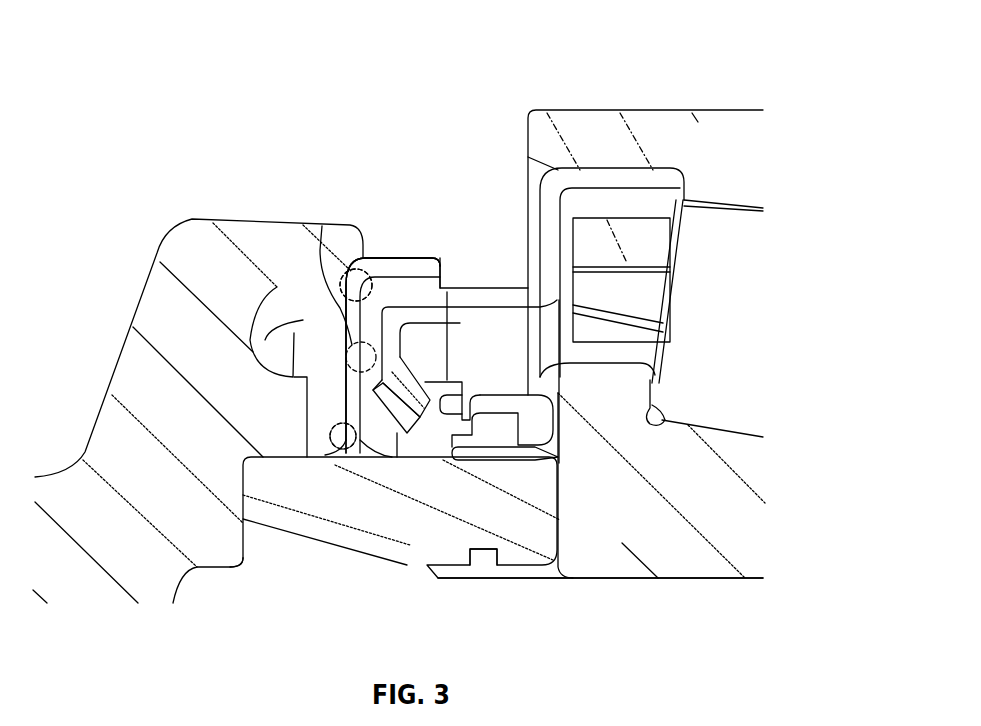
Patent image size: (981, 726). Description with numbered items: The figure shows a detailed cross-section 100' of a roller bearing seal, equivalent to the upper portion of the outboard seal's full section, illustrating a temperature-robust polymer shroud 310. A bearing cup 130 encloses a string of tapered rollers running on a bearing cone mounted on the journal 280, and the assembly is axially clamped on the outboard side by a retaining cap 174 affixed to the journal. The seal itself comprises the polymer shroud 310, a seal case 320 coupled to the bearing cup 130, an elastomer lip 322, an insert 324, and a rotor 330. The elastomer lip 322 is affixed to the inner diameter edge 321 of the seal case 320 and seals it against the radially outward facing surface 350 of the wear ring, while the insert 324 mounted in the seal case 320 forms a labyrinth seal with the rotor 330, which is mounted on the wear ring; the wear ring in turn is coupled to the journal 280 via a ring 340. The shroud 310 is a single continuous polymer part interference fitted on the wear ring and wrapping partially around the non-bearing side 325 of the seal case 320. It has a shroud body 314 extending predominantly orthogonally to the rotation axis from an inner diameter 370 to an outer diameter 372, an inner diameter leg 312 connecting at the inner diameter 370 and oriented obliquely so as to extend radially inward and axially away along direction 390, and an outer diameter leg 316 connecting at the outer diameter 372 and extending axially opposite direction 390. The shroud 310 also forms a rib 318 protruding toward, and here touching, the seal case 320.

The section 100' is at (783, 36).
The bearing cup 130 is at (748, 203).
The retaining cap 174 is at (209, 423).
The journal 280 is at (640, 615).
The temperature-robust polymer shroud 310 is at (401, 243).
The inner diameter leg 312 is at (312, 453).
The shroud body 314 is at (332, 380).
The outer diameter leg 316 is at (385, 255).
The rib 318 is at (341, 292).
The seal case 320 is at (512, 287).
The inner diameter edge 321 is at (409, 440).
The elastomer lip 322 is at (397, 455).
The insert 324 is at (432, 350).
The non-bearing side 325 is at (407, 283).
The rotor 330 is at (513, 393).
The ring 340 is at (477, 563).
The radially outward facing surface 350 is at (293, 455).
The inner diameter 370 is at (353, 458).
The outer diameter 372 is at (357, 268).
The direction 390 is at (300, 641).